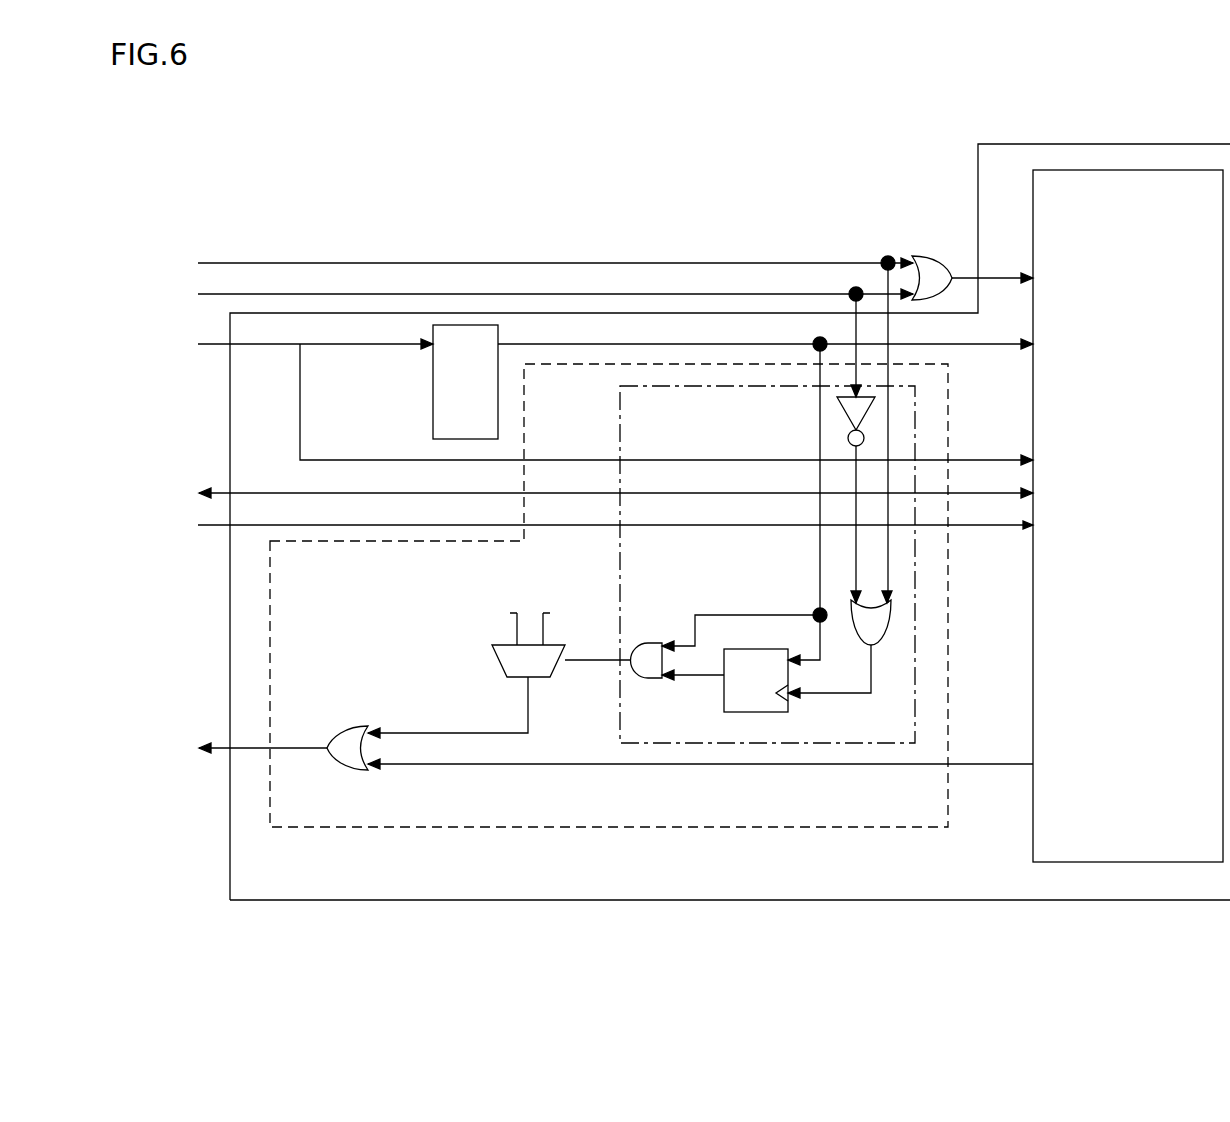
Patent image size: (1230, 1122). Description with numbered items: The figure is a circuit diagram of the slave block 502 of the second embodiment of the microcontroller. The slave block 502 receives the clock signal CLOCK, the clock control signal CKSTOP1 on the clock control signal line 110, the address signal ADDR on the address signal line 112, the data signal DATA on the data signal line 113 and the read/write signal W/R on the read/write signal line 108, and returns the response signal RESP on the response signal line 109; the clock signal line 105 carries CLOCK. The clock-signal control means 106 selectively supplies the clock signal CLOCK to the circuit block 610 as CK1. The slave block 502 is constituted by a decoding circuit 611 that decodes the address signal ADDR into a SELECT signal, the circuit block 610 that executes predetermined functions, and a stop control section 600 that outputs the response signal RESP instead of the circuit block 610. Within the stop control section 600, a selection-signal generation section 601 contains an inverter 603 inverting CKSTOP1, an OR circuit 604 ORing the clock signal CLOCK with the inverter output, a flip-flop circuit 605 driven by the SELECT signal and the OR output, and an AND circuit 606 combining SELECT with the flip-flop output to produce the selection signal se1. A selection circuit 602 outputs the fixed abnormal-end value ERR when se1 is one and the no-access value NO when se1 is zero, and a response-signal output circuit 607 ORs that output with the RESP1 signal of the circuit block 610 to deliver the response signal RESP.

The clock signal line CLOCK 105 is at (530, 419).
The clock control signal line 110 is at (530, 332).
The address signal line 112 is at (590, 391).
The data signal line 113 is at (590, 487).
The read/write signal line 108 is at (590, 519).
The response signal line 109 is at (236, 742).
The clock-signal control means 106 is at (930, 262).
The slave block 502 is at (1043, 143).
The circuit block 610 is at (1157, 170).
The decoding circuit 611 is at (433, 410).
The inverter 603 is at (837, 420).
The logical-sum circuit (OR circuit) 604 is at (891, 630).
The flip-flop circuit 605 is at (724, 700).
The logical-product circuit (AND circuit) 606 is at (642, 642).
The selection circuit 602 is at (497, 660).
The response-signal output circuit (OR circuit) 607 is at (345, 770).
The selection-signal generation section 601 is at (778, 745).
The stop control section 600 is at (675, 828).